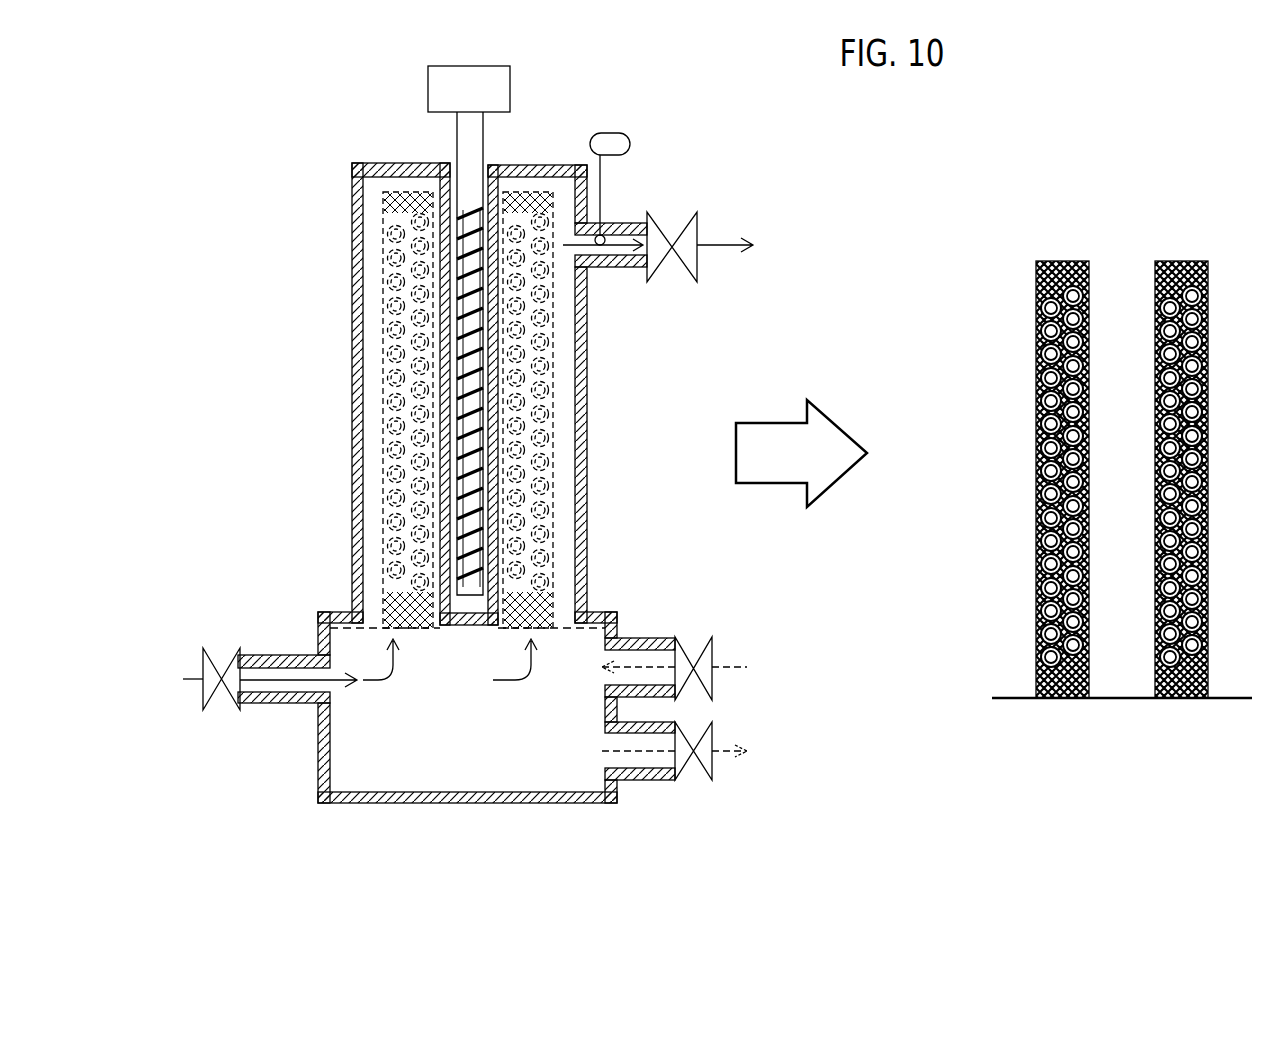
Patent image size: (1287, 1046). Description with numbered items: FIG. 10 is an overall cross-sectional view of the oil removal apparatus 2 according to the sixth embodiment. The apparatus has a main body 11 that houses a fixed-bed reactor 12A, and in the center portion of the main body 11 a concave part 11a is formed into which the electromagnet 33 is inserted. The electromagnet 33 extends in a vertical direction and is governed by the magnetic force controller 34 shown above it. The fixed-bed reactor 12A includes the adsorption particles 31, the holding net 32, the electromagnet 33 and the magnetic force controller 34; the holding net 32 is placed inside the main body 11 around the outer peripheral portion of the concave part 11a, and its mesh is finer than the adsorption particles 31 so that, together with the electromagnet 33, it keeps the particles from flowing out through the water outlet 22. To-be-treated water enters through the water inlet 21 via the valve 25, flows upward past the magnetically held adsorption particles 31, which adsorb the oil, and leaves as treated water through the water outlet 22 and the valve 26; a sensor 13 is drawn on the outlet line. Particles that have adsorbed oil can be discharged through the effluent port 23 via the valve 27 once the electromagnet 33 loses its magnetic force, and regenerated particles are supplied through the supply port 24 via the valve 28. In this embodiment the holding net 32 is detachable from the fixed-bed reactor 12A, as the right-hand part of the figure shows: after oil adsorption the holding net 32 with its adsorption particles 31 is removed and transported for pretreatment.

The oil removal apparatus 2 is at (753, 152).
The main body 11 is at (587, 548).
The concave part 11a is at (458, 183).
The fixed-bed reactor 12A is at (430, 648).
The pressure sensor 13 is at (631, 144).
The water inlet 21 is at (285, 703).
The water outlet 22 is at (600, 268).
The effluent port 23 is at (643, 780).
The supply port 24 is at (652, 638).
The valve 25 is at (205, 696).
The valve 26 is at (698, 268).
The valve 27 is at (713, 768).
The valve 28 is at (713, 650).
The adsorption particles 31 is at (796, 441).
The holding net 32 is at (392, 190).
The electromagnet 33 is at (470, 208).
The magnetic force controller 34 is at (510, 95).